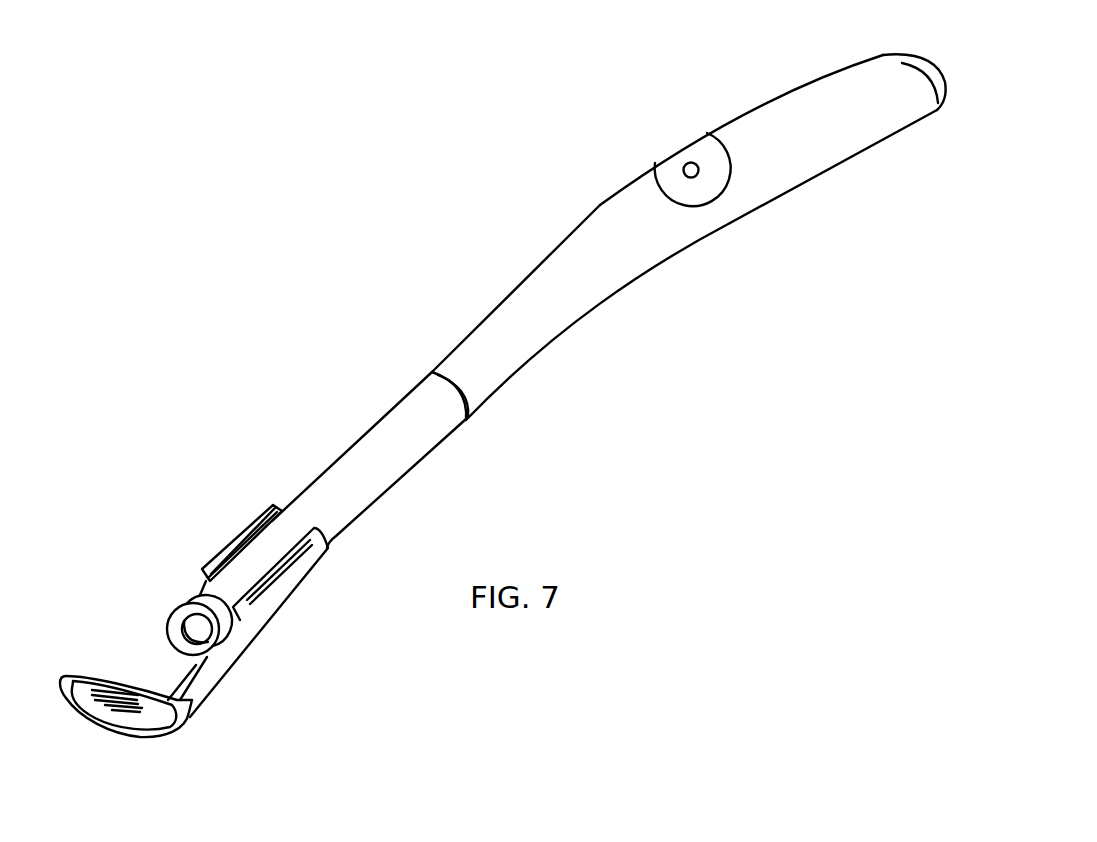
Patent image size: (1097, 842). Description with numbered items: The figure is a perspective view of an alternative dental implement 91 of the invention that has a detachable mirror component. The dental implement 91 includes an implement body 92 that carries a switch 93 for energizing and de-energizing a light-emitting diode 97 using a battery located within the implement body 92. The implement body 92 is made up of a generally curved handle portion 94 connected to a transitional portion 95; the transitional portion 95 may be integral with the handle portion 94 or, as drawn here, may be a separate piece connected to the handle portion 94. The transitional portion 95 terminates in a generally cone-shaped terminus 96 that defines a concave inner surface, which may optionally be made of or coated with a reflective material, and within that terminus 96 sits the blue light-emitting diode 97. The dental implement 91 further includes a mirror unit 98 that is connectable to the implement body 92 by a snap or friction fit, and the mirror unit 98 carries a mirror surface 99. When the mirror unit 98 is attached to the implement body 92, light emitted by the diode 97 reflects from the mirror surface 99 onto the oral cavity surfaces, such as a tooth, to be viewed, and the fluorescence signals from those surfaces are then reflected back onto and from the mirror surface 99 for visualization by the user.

The dental implement 91 is at (497, 119).
The implement body 92 is at (740, 117).
The switch 93 is at (685, 162).
The handle portion 94 is at (563, 313).
The transitional portion 95 is at (408, 448).
The cone-shaped terminus 96 is at (193, 598).
The light-emitting diode 97 is at (183, 627).
The mirror unit 98 is at (290, 593).
The mirror surface 99 is at (156, 712).